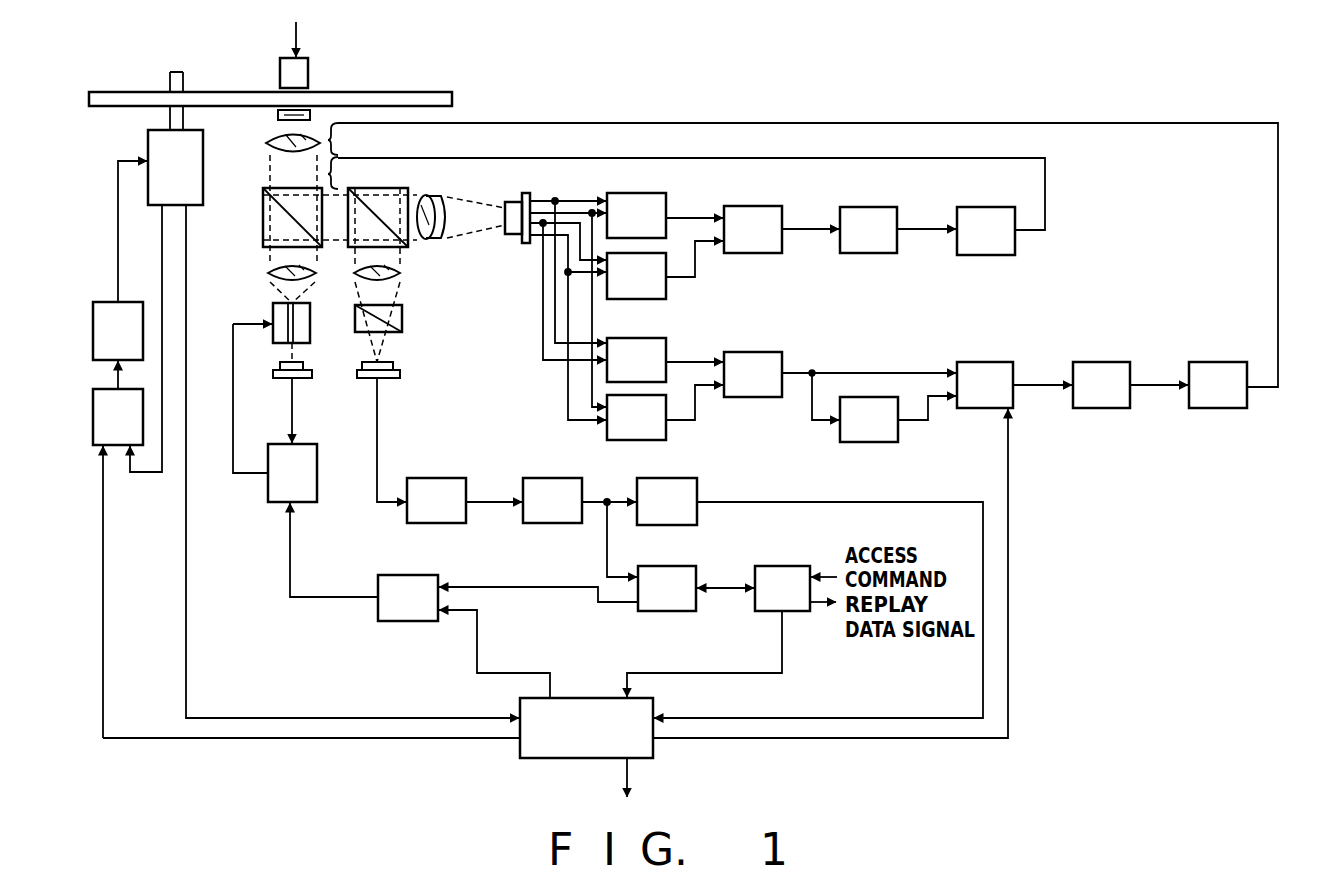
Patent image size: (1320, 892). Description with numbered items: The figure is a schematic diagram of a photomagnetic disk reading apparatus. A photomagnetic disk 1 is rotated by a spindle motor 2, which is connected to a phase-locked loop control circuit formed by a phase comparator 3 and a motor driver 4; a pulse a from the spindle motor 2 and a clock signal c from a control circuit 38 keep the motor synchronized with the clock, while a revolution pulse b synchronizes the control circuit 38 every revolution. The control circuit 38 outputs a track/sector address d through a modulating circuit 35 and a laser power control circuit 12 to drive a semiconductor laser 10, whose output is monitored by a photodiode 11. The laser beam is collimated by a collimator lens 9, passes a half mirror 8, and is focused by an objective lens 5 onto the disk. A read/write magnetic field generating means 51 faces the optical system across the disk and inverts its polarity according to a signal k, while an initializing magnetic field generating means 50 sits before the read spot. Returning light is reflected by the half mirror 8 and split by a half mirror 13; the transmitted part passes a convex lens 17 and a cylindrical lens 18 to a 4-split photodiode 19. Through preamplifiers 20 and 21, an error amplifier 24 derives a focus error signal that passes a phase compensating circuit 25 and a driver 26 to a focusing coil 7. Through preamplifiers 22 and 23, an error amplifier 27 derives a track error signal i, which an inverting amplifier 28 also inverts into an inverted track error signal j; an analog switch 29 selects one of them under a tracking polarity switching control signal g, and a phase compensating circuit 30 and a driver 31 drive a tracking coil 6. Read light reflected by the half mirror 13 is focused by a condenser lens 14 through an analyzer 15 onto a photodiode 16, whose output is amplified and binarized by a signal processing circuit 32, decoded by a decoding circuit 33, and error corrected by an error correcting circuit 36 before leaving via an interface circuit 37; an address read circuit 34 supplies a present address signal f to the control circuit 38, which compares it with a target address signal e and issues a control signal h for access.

The photomagnetic disk 1 is at (420, 92).
The spindle motor 2 is at (203, 177).
The phase comparator 3 is at (93, 422).
The motor driver 4 is at (93, 345).
The objective lens 5 is at (270, 143).
The tracking coil 6 is at (339, 140).
The focusing coil 7 is at (339, 175).
The half mirror 8 is at (263, 226).
The collimator lens 9 is at (268, 273).
The semiconductor laser 10 is at (310, 318).
The photodiode 11 is at (311, 368).
The laser power control circuit 12 is at (317, 480).
The half mirror 13 is at (392, 188).
The condenser lens 14 is at (400, 271).
The analyzer 15 is at (402, 318).
The photodiode 16 is at (400, 368).
The convex lens 17 is at (428, 196).
The cylindrical lens 18 is at (443, 197).
The 4-split photodiode 19 is at (513, 200).
The preamplifier 20 is at (648, 193).
The preamplifier 21 is at (666, 270).
The preamplifier 22 is at (657, 338).
The preamplifier 23 is at (666, 412).
The error amplifier 24 is at (763, 206).
The phase compensating circuit 25 is at (860, 207).
The driver 26 is at (975, 207).
The error amplifier 27 is at (753, 352).
The inverting amplifier 28 is at (860, 397).
The analog switch 29 is at (980, 362).
The phase compensating circuit 30 is at (1105, 362).
The driver 31 is at (1212, 362).
The signal processing circuit 32 is at (420, 478).
The decoding circuit 33 is at (560, 478).
The address read circuit 34 is at (667, 478).
The modulating circuit 35 is at (433, 575).
The error correcting circuit 36 is at (688, 566).
The interface circuit 37 is at (787, 566).
The control circuit 38 is at (525, 758).
The initializing magnetic field generating means 50 is at (277, 115).
The read/write magnetic field generating means 51 is at (308, 80).
The pulse a is at (143, 472).
The revolution pulse b is at (395, 718).
The clock signal c is at (394, 738).
The track/sector address d is at (515, 673).
The target address signal e is at (688, 673).
The present address signal f is at (835, 718).
The tracking polarity switching control signal g is at (843, 750).
The control signal h is at (625, 780).
The track error signal i is at (921, 372).
The inverted track error signal j is at (923, 420).
The signal k is at (293, 35).